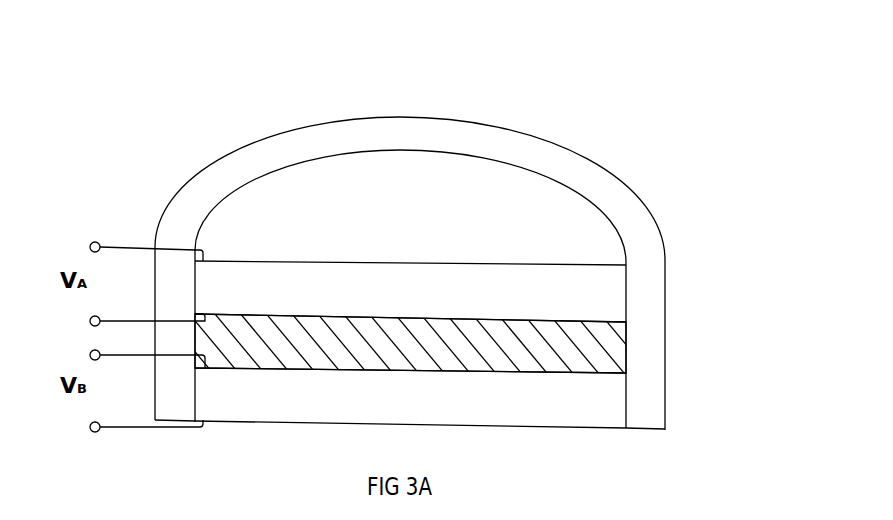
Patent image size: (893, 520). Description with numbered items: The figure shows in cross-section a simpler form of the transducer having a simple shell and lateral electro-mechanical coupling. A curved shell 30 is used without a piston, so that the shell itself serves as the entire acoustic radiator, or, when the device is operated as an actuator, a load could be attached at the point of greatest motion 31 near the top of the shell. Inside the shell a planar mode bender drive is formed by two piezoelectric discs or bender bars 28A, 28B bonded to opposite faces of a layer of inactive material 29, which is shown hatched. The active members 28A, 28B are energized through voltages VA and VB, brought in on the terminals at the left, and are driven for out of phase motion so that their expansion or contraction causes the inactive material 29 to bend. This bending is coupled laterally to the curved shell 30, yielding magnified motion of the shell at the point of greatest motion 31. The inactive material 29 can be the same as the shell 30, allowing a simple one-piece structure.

The piezoelectric member 28A is at (605, 302).
The piezoelectric bender bar or disc 28B is at (605, 403).
The inactive material 29 is at (605, 348).
The curved shell 30 is at (616, 172).
The point of greatest motion 31 is at (413, 117).